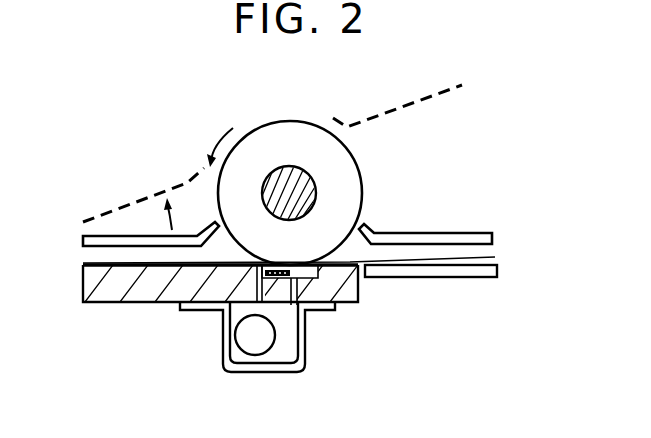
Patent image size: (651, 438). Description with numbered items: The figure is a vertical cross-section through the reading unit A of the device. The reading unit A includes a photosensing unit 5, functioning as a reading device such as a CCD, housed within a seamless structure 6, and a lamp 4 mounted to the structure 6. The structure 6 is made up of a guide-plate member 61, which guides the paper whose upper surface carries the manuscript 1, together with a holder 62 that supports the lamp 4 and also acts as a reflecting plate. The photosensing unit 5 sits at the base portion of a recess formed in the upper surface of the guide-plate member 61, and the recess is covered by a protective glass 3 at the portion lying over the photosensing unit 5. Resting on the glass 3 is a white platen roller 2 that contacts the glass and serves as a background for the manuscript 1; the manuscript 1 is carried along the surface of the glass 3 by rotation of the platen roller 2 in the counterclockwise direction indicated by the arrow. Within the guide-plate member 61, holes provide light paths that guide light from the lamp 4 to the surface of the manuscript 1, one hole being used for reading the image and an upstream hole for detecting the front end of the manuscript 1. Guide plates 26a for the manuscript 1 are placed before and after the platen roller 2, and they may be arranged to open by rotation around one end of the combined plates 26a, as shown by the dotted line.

The manuscript 1 is at (470, 257).
The platen roller 2 is at (343, 183).
The protective glass 3 is at (319, 268).
The lamp 4 is at (260, 344).
The photosensing unit 5 is at (283, 282).
The seamless structure 6 is at (80, 300).
The guide-plate member 61 is at (110, 288).
The holder 62 is at (225, 371).
The guide plates 26a is at (147, 236).
The reading unit A is at (102, 233).